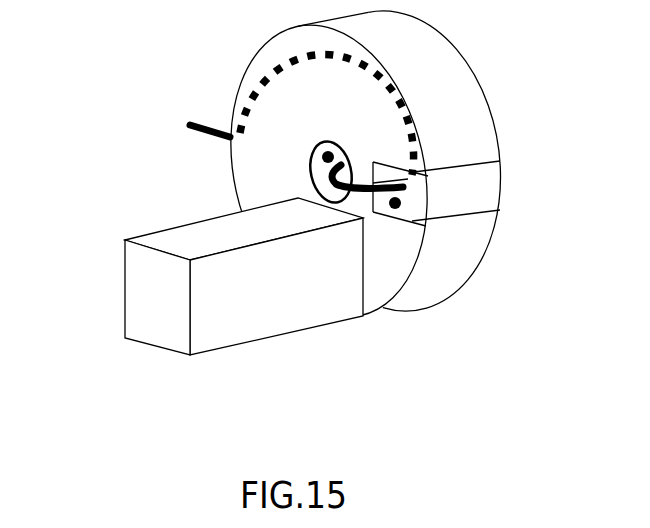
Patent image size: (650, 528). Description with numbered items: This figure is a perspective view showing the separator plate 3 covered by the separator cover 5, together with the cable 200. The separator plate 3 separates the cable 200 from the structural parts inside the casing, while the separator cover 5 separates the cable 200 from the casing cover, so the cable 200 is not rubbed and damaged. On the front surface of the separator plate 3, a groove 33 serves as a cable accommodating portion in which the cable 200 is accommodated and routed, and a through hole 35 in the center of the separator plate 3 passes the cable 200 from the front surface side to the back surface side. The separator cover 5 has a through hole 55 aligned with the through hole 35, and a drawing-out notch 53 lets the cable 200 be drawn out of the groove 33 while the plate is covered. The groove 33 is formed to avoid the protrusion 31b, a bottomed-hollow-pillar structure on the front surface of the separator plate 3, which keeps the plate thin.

The separator plate 3 is at (486, 192).
The separator cover 5 is at (265, 89).
The protrusion 31b is at (210, 295).
The groove 33 is at (437, 251).
The drawing-out notch 53 is at (386, 210).
The through hole 35 is at (194, 173).
The through hole 55 is at (313, 154).
The cable 200 is at (357, 212).